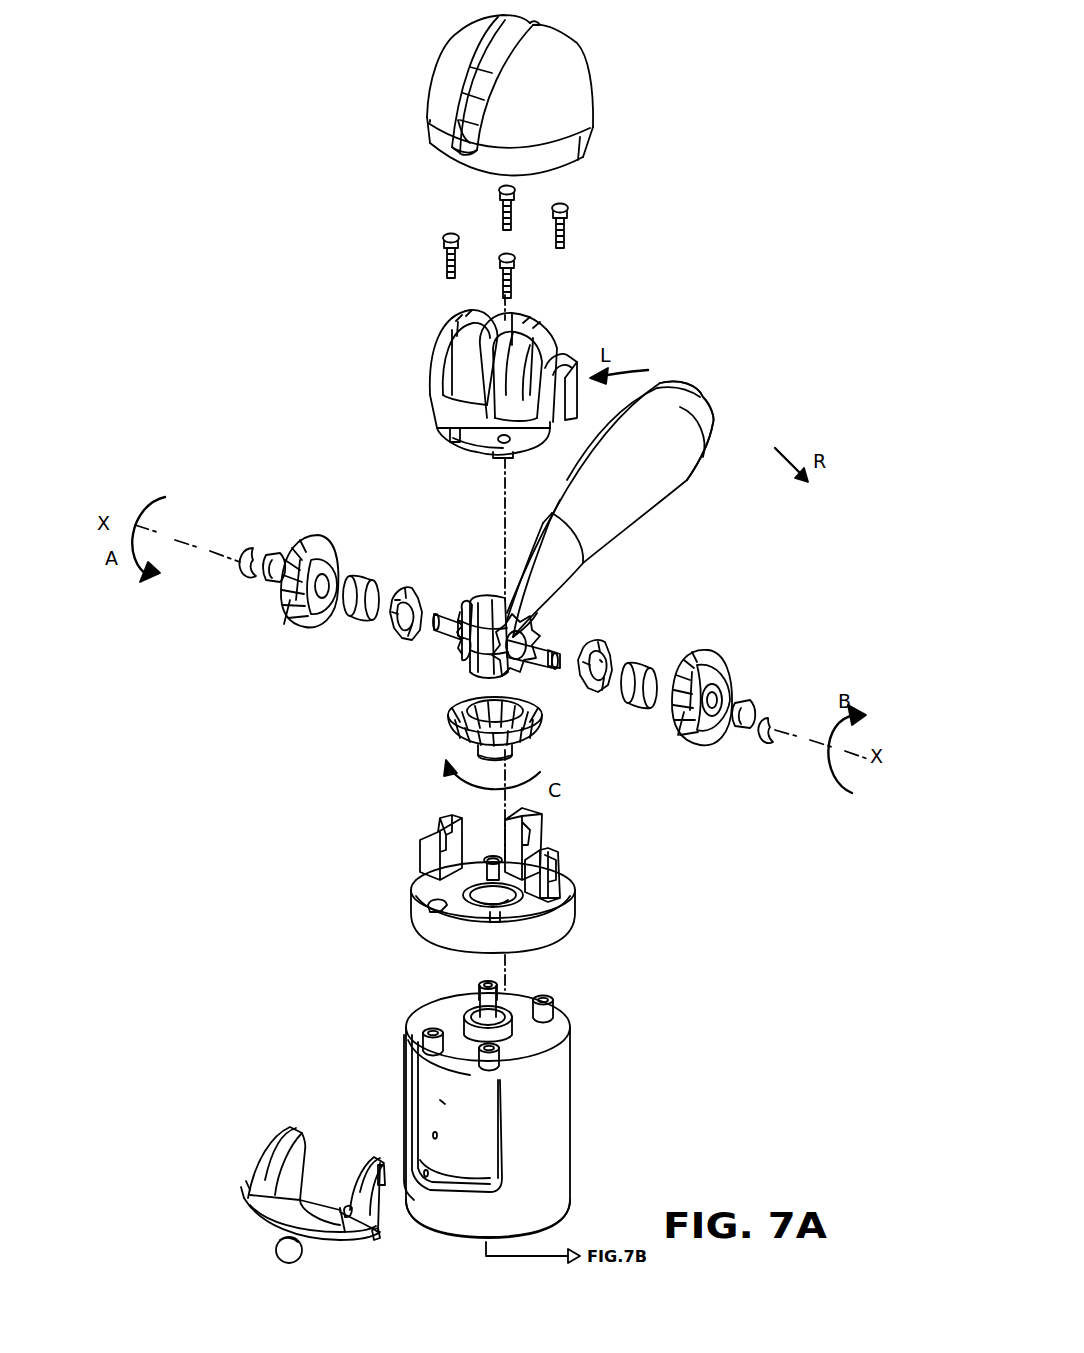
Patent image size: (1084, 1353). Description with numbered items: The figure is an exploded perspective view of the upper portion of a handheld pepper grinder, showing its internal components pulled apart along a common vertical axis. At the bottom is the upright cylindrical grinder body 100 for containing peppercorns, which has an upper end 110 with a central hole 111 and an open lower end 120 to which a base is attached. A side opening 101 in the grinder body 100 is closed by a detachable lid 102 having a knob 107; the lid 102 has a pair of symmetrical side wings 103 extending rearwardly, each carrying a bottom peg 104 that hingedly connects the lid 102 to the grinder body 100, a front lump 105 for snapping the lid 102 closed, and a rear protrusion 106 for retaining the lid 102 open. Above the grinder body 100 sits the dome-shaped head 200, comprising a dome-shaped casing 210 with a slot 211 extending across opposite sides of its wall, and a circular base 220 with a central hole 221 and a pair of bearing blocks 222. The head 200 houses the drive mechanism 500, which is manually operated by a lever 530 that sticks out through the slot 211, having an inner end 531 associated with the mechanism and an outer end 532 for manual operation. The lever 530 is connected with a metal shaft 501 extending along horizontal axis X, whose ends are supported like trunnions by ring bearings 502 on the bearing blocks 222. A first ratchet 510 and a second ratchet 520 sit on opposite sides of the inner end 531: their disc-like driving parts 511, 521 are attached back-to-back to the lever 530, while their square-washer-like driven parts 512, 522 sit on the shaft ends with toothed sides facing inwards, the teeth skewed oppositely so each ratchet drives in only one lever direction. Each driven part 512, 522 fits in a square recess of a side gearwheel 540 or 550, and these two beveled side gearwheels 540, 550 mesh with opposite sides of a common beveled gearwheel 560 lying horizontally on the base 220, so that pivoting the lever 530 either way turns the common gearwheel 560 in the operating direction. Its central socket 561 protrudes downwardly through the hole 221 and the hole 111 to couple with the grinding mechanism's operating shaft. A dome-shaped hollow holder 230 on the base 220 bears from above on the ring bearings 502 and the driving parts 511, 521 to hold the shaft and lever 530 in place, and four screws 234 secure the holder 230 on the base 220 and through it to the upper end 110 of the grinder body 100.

The grinder body 100 is at (636, 1088).
The side opening 101 is at (438, 1090).
The lid 102 is at (258, 1210).
The side wings 103 is at (352, 1186).
The bottom peg 104 is at (380, 1240).
The front lump 105 is at (345, 1215).
The rear protrusion 106 is at (378, 1170).
The knob 107 is at (276, 1250).
The upper end 110 is at (568, 1030).
The central hole 111 is at (482, 1012).
The open lower end 120 is at (568, 1208).
The head 200 is at (366, 374).
The dome-shaped casing 210 is at (636, 101).
The slot 211 is at (488, 57).
The base 220 is at (632, 897).
The central hole 221 is at (472, 887).
The bearing blocks 222 is at (440, 826).
The holder 230 is at (572, 310).
The screws 234 is at (568, 210).
The drive mechanism 500 is at (336, 462).
The shaft 501 is at (440, 633).
The ring bearings 502 is at (272, 553).
The first ratchet 510 is at (472, 530).
The driving part 511 is at (480, 595).
The driven part 512 is at (406, 585).
The second ratchet 520 is at (668, 602).
The driving part 521 is at (535, 620).
The driven part 522 is at (600, 645).
The lever 530 is at (634, 514).
The inner end 531 is at (470, 660).
The outer end 532 is at (712, 414).
The side gearwheel 540 is at (296, 625).
The side gearwheel 550 is at (690, 745).
The common gearwheel 560 is at (470, 730).
The central socket 561 is at (515, 750).